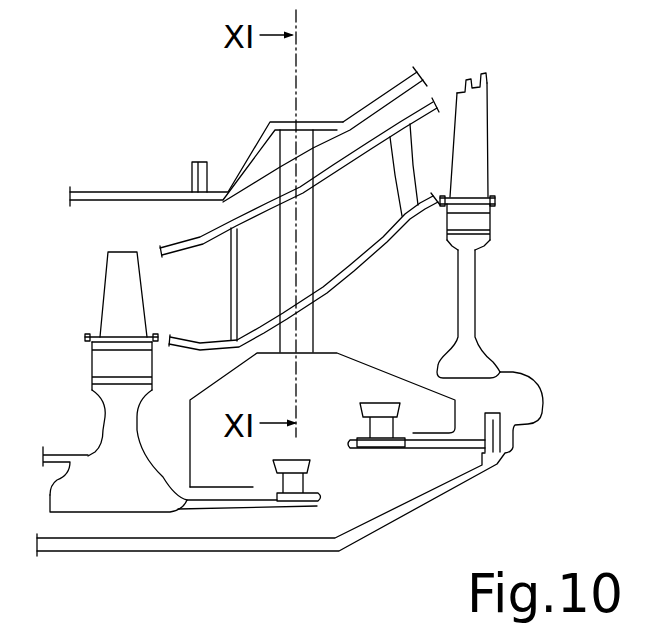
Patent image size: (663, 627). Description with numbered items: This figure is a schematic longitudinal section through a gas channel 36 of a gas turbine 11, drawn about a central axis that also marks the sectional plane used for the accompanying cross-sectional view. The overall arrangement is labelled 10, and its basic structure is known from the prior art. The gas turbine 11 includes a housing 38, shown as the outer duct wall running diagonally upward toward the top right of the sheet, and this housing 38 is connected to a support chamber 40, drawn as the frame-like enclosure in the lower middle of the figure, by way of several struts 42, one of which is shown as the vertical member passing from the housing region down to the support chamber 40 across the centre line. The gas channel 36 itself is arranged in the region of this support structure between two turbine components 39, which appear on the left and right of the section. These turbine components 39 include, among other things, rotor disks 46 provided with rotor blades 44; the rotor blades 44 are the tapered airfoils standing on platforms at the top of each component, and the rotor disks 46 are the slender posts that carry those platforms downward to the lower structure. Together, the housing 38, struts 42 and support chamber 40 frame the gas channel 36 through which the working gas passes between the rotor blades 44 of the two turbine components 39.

The turbine duct / flow path walls 10 is at (365, 130).
The gas turbine 11 is at (99, 139).
The gas channel 36 is at (163, 301).
The housing 38 is at (400, 116).
The turbine components 39 is at (539, 435).
The support chamber 40 is at (322, 427).
The struts 42 is at (287, 230).
The rotor blades 44 is at (475, 122).
The rotor disks 46 is at (88, 452).